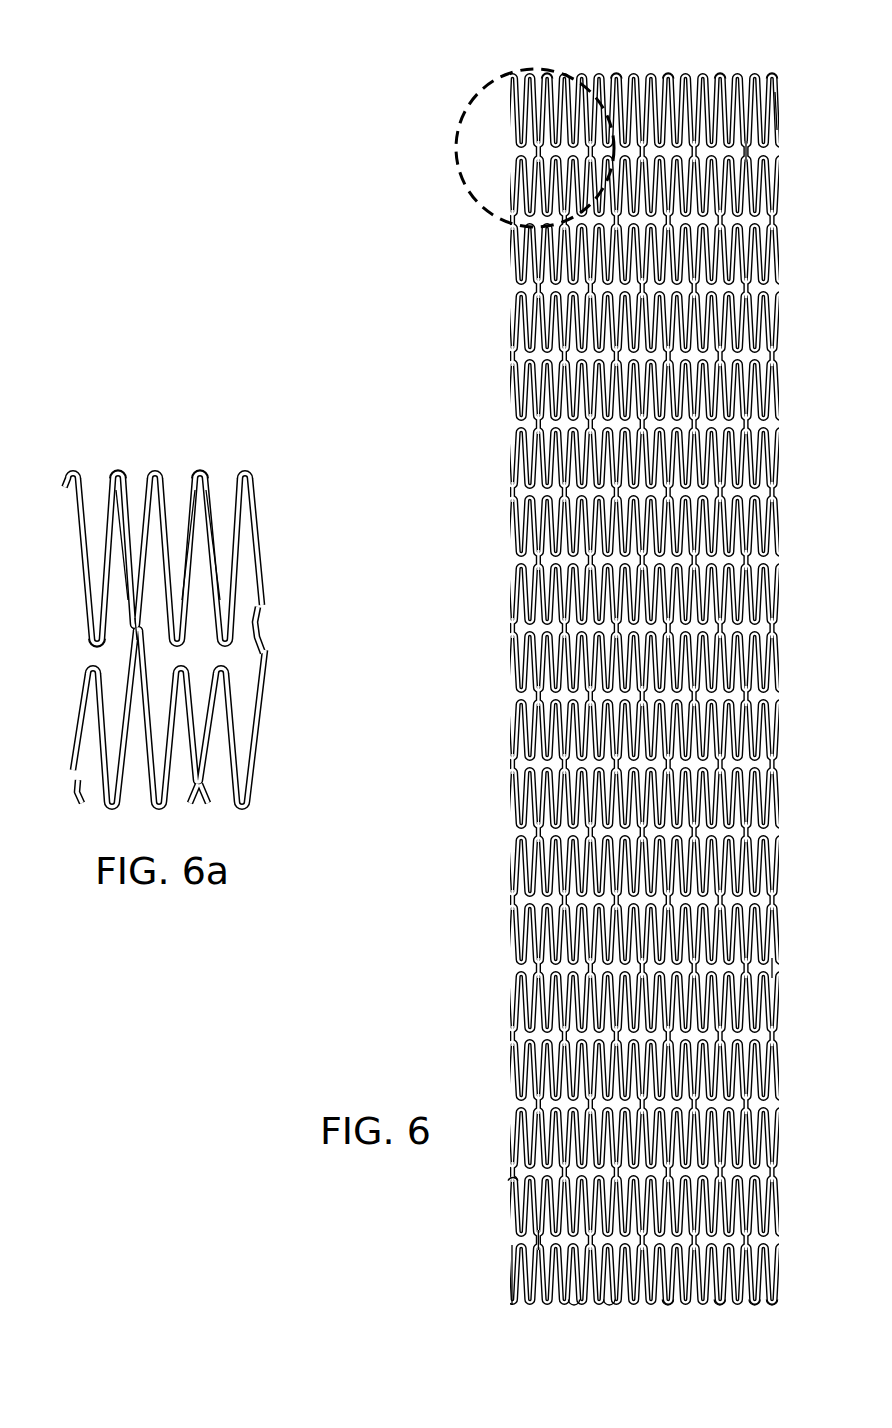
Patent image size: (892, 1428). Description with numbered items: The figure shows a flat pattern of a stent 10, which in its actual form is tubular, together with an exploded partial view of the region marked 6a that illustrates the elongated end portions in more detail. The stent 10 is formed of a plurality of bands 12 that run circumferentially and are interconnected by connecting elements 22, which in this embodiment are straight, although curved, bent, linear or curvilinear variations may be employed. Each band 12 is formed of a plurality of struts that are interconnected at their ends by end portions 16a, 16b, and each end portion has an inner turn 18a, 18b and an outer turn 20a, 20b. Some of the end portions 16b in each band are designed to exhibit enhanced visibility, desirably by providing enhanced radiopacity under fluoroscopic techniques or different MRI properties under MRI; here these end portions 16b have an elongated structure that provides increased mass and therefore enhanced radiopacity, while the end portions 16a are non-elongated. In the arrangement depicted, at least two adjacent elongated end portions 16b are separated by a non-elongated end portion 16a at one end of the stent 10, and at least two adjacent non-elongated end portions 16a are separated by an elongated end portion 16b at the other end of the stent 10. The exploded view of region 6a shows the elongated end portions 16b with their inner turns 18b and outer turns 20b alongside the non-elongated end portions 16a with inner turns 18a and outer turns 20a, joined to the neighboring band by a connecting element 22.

In FIG. 6, the stent 10 is at (434, 348).
In FIG. 6, the band 12 is at (497, 1245).
In FIG. 6, the non-elongated end portion 16a is at (663, 73).
In FIG. 6A, the non-elongated end portion 16a is at (200, 474).
In FIG. 6, the elongated end portion 16b is at (762, 73).
In FIG. 6A, the elongated end portion 16b is at (108, 474).
In FIG. 6, the inner turn 18a is at (542, 73).
In FIG. 6A, the inner turn 18a is at (205, 476).
In FIG. 6, the inner turn 18b is at (776, 93).
In FIG. 6A, the inner turn 18b is at (117, 517).
In FIG. 6, the outer turn 20a is at (610, 73).
In FIG. 6A, the outer turn 20a is at (196, 478).
In FIG. 6, the outer turn 20b is at (708, 73).
In FIG. 6A, the outer turn 20b is at (117, 482).
In FIG. 6, the connecting element 22 is at (762, 148).
In FIG. 6A, the connecting element 22 is at (125, 632).
In FIG. 6, the enlarged detail region shown in FIG. 6a is at (455, 150).